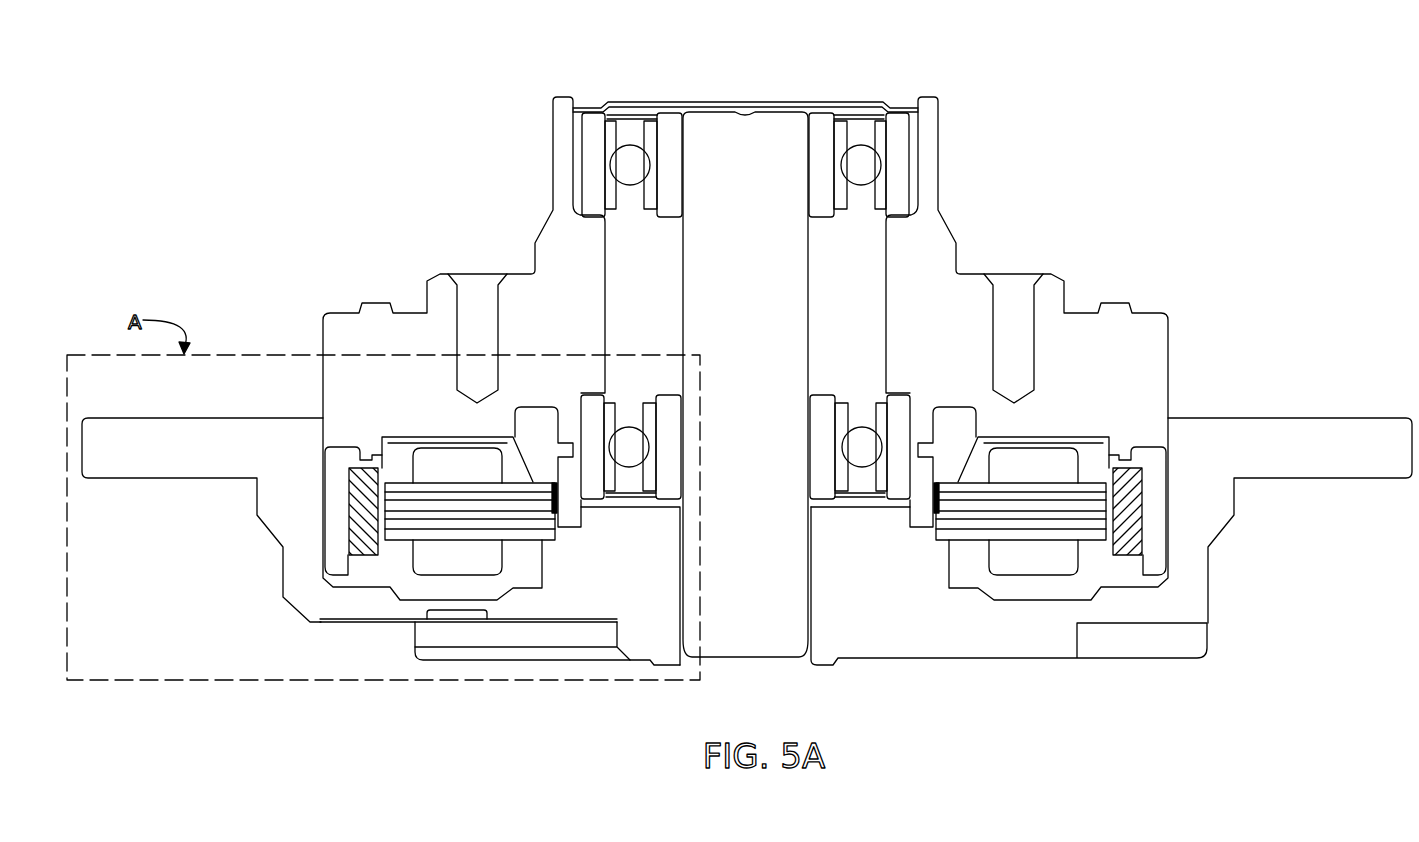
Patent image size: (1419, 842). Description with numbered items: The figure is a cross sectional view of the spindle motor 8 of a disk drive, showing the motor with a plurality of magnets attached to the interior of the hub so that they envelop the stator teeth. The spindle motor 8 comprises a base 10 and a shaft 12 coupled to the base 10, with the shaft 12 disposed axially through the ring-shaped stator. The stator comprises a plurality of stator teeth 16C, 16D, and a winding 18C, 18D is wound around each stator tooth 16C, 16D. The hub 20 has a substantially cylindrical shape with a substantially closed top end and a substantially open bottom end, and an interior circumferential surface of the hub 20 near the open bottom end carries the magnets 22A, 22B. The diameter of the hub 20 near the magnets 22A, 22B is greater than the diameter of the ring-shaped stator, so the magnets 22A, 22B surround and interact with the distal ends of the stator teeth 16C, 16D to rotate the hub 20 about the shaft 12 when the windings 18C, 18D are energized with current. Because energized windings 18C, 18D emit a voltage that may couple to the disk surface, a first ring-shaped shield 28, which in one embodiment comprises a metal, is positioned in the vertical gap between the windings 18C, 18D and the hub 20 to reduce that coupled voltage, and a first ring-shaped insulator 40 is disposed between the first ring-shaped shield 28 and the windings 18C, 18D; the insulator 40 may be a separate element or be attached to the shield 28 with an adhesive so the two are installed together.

The spindle motor 8 is at (1078, 125).
The base 10 is at (313, 600).
The shaft 12 is at (757, 268).
The stator tooth 16C is at (528, 517).
The stator tooth 16D is at (960, 512).
The winding 18C is at (428, 463).
The winding 18D is at (1063, 463).
The hub 20 is at (544, 332).
The magnet 22A is at (363, 530).
The magnet 22B is at (1130, 530).
The first ring-shaped shield 28 is at (410, 437).
The first ring-shaped insulator 40 is at (437, 443).